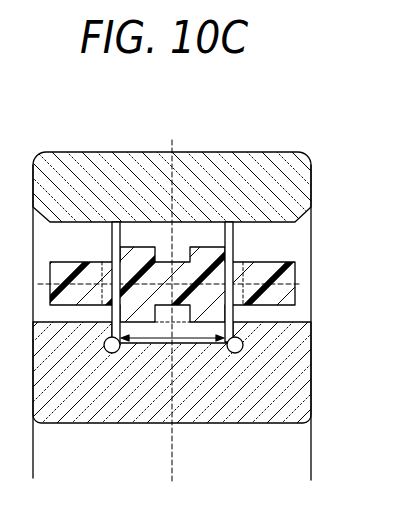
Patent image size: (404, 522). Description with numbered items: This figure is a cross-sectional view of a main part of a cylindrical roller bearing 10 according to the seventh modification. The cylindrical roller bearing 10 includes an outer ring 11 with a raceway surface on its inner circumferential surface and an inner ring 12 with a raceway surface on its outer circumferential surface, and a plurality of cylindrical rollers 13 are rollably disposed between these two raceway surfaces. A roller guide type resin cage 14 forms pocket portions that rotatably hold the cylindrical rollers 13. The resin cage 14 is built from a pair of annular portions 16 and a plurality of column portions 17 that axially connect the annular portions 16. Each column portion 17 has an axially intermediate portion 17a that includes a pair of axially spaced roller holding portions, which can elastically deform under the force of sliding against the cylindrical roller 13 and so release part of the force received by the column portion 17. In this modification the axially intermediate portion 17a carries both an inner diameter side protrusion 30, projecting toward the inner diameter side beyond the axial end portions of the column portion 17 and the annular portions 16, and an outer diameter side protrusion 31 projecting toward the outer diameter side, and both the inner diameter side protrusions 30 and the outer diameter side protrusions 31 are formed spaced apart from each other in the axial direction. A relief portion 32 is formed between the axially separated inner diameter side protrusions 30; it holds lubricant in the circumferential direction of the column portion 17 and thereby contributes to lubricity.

The cylindrical roller bearing 10 is at (244, 148).
The outer ring 11 is at (305, 187).
The inner ring 12 is at (305, 388).
The cylindrical roller 13 is at (225, 240).
The resin cage 14 is at (300, 270).
The annular portion 16 is at (290, 290).
The column portion 17 is at (138, 248).
The axially intermediate portion 17a is at (146, 341).
The inner diameter side protrusion 30 is at (125, 343).
The outer diameter side protrusion 31 is at (199, 246).
The relief portion 32 is at (182, 325).